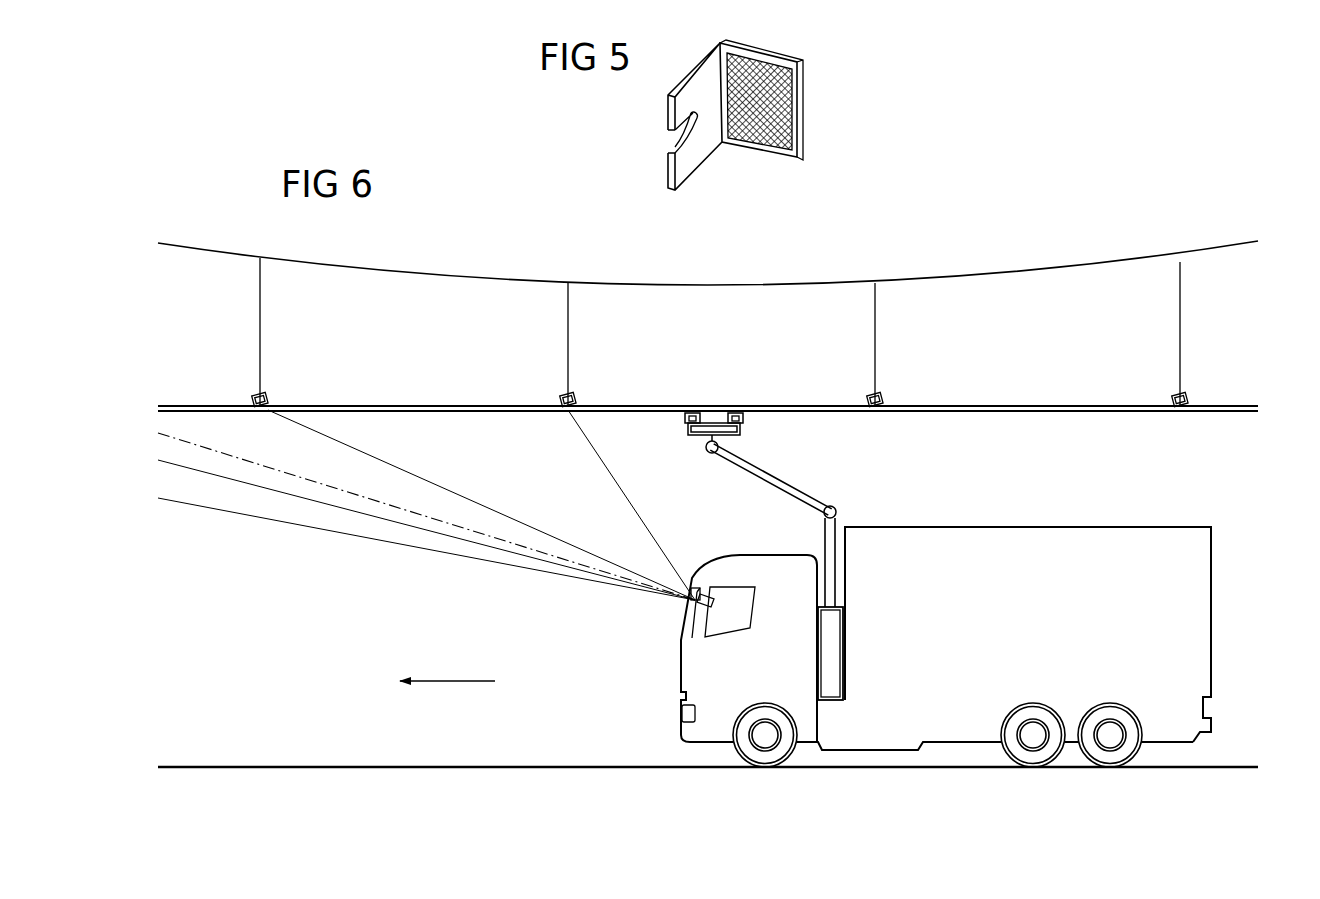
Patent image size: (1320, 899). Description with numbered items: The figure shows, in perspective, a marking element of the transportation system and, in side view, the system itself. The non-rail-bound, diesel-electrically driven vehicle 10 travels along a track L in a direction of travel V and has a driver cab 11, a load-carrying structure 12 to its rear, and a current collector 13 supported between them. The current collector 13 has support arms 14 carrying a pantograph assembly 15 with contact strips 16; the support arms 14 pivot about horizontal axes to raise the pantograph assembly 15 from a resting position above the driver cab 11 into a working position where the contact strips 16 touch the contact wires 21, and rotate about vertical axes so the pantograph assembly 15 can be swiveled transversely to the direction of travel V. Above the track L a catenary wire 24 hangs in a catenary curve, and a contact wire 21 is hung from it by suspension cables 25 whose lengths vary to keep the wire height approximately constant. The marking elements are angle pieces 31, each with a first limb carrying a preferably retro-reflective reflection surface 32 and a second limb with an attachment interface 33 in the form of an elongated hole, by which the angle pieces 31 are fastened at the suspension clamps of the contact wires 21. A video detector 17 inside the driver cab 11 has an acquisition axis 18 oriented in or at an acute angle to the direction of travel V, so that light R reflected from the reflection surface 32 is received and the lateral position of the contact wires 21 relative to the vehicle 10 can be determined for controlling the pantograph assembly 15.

In FIG. 6, the vehicle 10 is at (942, 560).
In FIG. 6, the driver cab 11 is at (685, 680).
In FIG. 6, the load-carrying structure 12 is at (1200, 594).
In FIG. 6, the current collector 13 is at (780, 526).
In FIG. 6, the support arms 14 is at (765, 472).
In FIG. 6, the pantograph assembly 15 is at (680, 406).
In FIG. 6, the contact strips 16 is at (735, 413).
In FIG. 6, the video detector 17 is at (718, 600).
In FIG. 6, the acquisition axis 18 is at (237, 458).
In FIG. 6, the contact wires 21 is at (1010, 404).
In FIG. 6, the catenary wires 24 is at (440, 275).
In FIG. 6, the suspension cables 25 is at (570, 340).
In FIG. 5, the angle pieces 31 is at (756, 125).
In FIG. 6, the angle pieces 31 is at (687, 380).
In FIG. 5, the reflection surface 32 is at (760, 140).
In FIG. 6, the reflection surface 32 is at (270, 402).
In FIG. 5, the attachment interface 33 is at (680, 135).
In FIG. 6, the light R is at (430, 481).
In FIG. 6, the direction of travel V is at (468, 680).
In FIG. 6, the track L is at (245, 766).